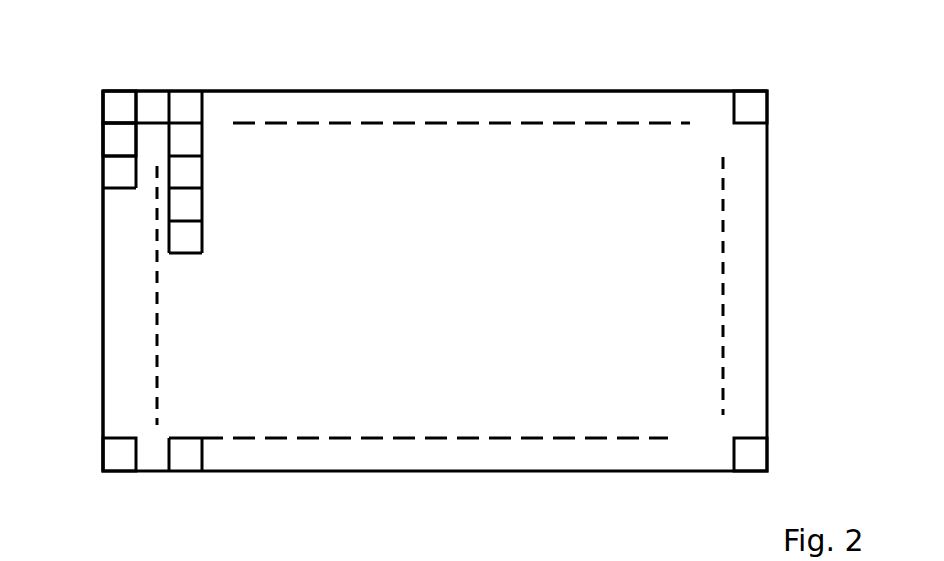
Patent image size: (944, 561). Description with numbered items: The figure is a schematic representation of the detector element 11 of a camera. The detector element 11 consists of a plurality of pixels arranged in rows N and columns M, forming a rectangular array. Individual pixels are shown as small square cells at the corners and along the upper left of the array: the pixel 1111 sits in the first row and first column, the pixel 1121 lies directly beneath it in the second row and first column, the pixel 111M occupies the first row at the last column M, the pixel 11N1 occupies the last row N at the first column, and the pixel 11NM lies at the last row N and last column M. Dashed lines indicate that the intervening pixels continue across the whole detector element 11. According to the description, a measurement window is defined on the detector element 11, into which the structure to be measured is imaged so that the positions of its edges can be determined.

The detector element 11 is at (430, 258).
The pixel 1111 is at (118, 98).
The pixel 1121 is at (113, 143).
The pixel 111M is at (753, 102).
The pixel 11N1 is at (120, 453).
The pixel 11NM is at (750, 460).
The rows N is at (95, 99).
The columns M is at (191, 80).